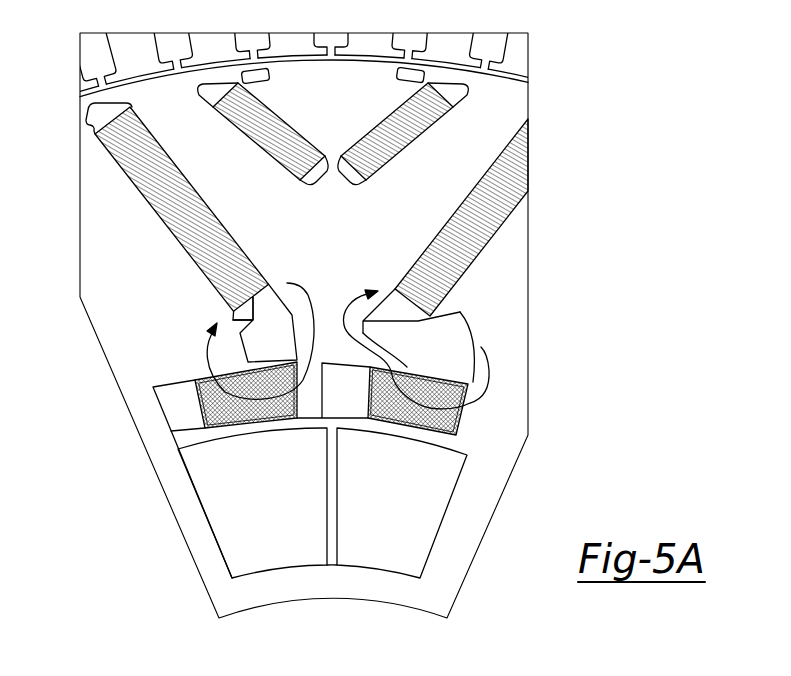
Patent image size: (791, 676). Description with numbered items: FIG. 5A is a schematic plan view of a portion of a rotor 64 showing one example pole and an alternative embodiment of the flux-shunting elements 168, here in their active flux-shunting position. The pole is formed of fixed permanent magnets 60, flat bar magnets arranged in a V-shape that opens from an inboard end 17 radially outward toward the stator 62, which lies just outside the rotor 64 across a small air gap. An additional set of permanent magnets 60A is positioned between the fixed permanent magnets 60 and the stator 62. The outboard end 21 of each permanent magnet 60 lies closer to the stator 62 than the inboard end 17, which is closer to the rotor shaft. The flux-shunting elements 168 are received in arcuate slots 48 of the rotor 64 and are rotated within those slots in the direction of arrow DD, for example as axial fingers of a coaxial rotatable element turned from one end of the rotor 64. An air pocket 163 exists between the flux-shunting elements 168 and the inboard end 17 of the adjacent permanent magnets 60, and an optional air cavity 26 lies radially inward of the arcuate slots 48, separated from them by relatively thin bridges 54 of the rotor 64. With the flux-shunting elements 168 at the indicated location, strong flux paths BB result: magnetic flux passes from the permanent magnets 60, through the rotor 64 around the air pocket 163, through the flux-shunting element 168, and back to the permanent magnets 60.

The outboard end 21 is at (91, 126).
The permanent magnets 60 is at (170, 212).
The additional set of permanent magnets 60A is at (263, 134).
The stator 62 is at (527, 80).
The rotor 64 is at (345, 228).
The inboard end 17 is at (240, 313).
The air pocket 163 is at (250, 347).
The arcuate slots 48 is at (209, 404).
The flux-shunting elements 168 is at (207, 410).
The bridges 54 is at (173, 446).
The air cavity 26 is at (412, 528).
The flux paths BB is at (207, 350).
The direction of arrow DD is at (283, 452).